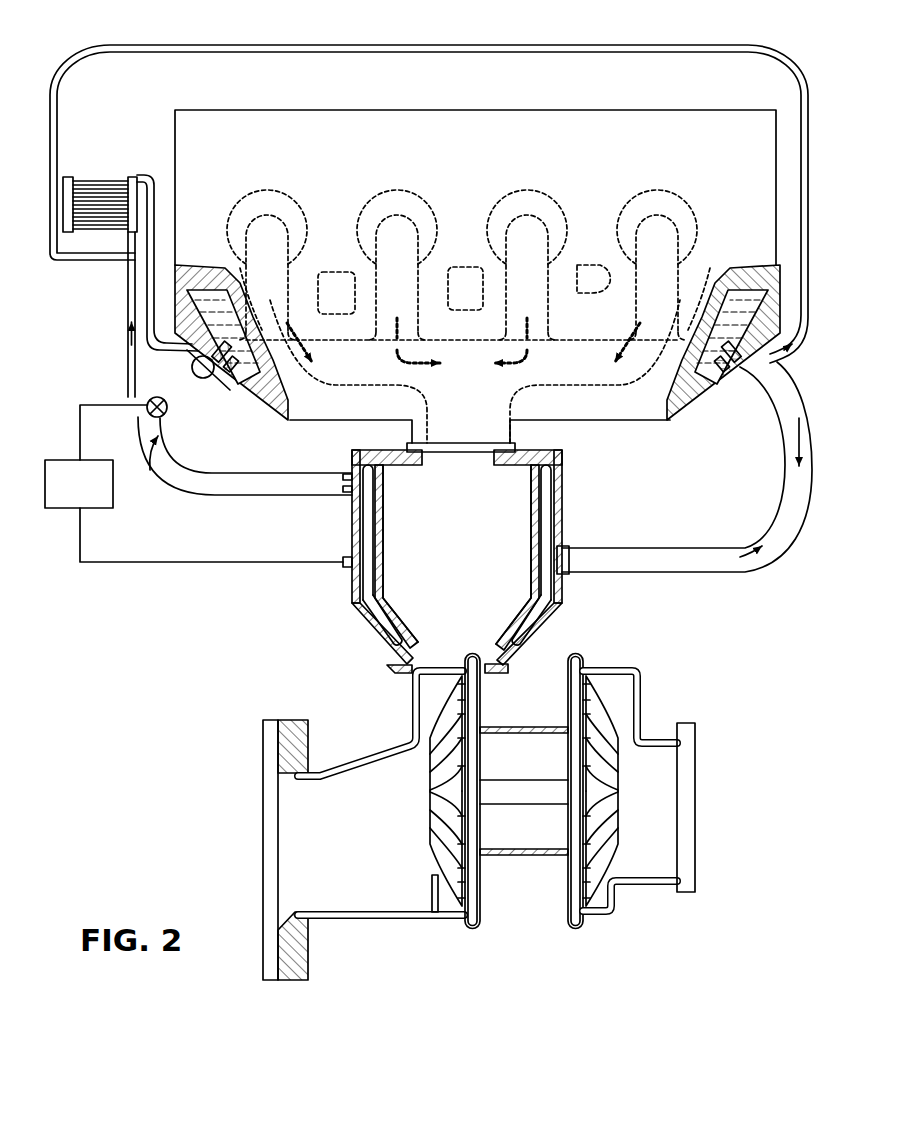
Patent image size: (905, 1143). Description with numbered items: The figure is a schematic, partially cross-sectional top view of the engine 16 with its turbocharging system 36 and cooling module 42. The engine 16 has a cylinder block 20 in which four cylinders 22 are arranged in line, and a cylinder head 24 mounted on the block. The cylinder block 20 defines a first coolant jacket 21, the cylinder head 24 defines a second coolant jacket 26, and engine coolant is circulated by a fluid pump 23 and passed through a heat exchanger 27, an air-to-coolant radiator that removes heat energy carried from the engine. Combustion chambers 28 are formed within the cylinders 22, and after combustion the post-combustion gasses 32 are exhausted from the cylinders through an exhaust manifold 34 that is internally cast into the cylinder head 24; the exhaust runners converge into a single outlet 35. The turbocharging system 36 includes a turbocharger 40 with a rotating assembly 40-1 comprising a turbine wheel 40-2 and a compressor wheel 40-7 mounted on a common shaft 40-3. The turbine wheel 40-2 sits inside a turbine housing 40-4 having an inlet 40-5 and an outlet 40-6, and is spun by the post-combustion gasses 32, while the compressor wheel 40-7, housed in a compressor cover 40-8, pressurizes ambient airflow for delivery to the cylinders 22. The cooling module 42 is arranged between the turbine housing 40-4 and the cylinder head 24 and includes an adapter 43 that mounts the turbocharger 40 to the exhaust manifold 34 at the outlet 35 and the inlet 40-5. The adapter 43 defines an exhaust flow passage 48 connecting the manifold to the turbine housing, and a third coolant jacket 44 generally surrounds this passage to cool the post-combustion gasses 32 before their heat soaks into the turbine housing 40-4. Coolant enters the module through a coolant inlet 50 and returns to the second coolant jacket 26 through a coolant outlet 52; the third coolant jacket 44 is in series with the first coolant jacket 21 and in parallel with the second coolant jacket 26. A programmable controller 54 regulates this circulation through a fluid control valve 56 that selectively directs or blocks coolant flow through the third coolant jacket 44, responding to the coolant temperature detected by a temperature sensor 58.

The engine 16 is at (712, 86).
The cylinder block 20 is at (777, 195).
The first coolant jacket 21 is at (724, 378).
The cylinders 22 is at (290, 200).
The fluid pump 23 is at (210, 380).
The cylinder head 24 is at (718, 122).
The second coolant jacket 26 is at (205, 262).
The heat exchanger 27 is at (100, 177).
The combustion chambers 28 is at (247, 212).
The post-combustion gasses 32 is at (412, 336).
The exhaust manifold 34 is at (586, 405).
The outlet 35 is at (407, 447).
The turbocharging system 36 is at (158, 752).
The turbocharger 40 is at (256, 722).
The rotating assembly 40-1 is at (528, 815).
The turbine wheel 40-2 is at (432, 786).
The shaft 40-3 is at (553, 796).
The turbine housing 40-4 is at (452, 916).
The inlet 40-5 is at (388, 670).
The outlet 40-6 is at (263, 857).
The compressor wheel 40-7 is at (612, 862).
The compressor cover 40-8 is at (642, 712).
The cooling module 42 is at (318, 582).
The adapter 43 is at (530, 625).
The third coolant jacket 44 is at (370, 596).
The exhaust flow passage 48 is at (457, 561).
The coolant inlet 50 is at (562, 576).
The coolant outlet 52 is at (352, 500).
The controller 54 is at (79, 484).
The fluid control valve 56 is at (168, 412).
The temperature sensor 58 is at (340, 562).